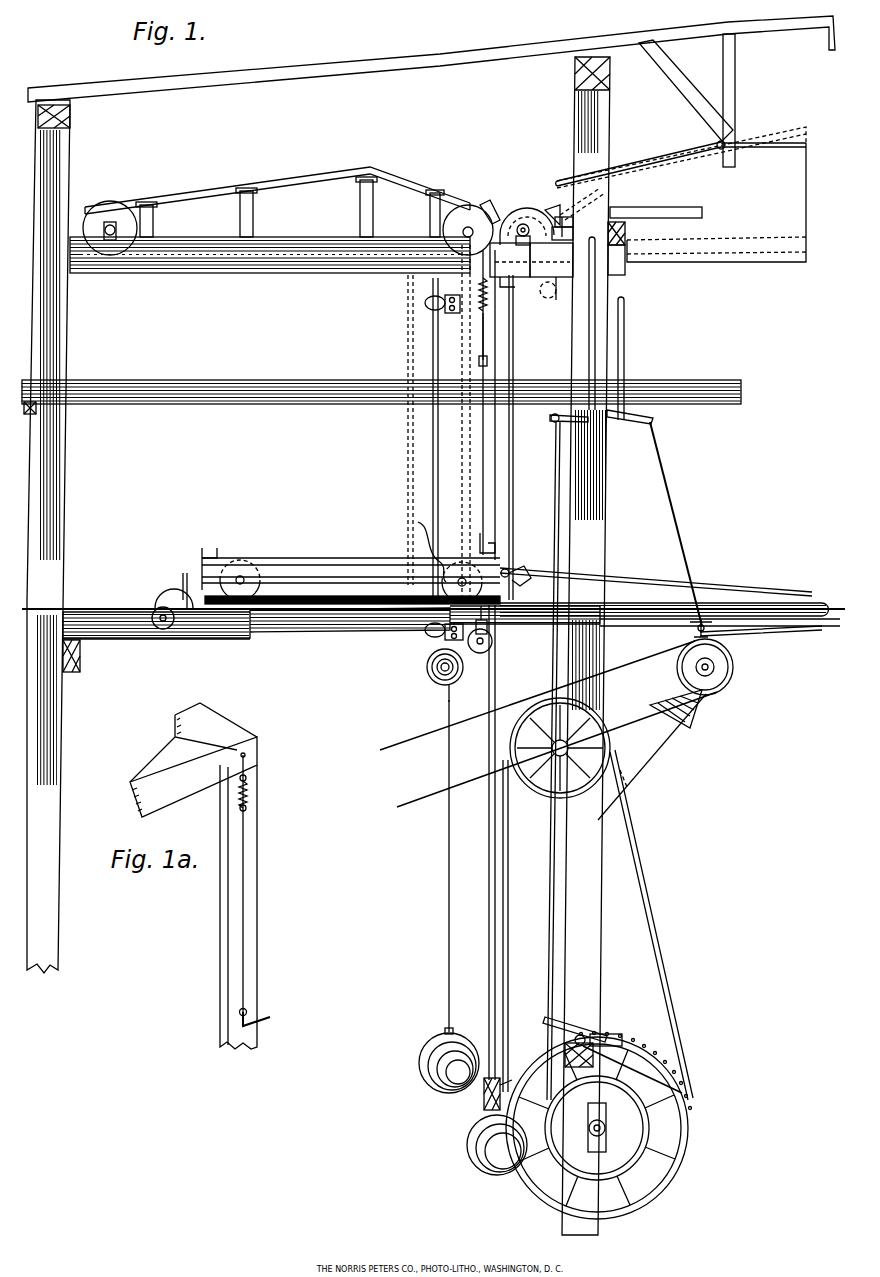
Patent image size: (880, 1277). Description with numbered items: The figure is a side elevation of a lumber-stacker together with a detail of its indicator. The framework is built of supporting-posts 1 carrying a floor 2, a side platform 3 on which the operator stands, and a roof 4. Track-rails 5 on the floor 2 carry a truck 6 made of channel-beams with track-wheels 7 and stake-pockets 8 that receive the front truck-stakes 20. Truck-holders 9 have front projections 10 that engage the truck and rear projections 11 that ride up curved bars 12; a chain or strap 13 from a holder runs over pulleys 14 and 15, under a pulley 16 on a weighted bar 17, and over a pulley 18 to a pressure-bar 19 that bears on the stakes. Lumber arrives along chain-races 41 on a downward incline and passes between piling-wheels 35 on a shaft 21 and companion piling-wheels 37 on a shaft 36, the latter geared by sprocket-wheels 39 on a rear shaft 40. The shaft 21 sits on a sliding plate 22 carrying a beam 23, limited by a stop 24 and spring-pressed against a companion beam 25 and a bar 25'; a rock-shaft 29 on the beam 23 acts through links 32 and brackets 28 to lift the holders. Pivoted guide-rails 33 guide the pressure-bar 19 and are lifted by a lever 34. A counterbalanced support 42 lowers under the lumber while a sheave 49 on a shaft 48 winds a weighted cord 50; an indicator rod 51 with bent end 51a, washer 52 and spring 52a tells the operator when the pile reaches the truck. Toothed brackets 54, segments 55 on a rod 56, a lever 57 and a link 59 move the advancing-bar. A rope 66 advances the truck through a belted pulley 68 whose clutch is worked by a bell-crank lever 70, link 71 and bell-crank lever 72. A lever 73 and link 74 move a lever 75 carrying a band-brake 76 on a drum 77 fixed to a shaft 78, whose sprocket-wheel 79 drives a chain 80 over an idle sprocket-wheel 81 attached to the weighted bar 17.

In FIG. 1, the supporting-posts 1 is at (576, 117).
In FIG. 1, the floor or platform 2 is at (92, 606).
In FIG. 1, the platform 3 is at (308, 386).
In FIG. 1, the roof 4 is at (360, 60).
In FIG. 1, the track-rails 5 is at (772, 600).
In FIG. 1, the truck 6 is at (302, 562).
In FIG. 1, the track-wheels 7 is at (250, 580).
In FIG. 1, the stake-pockets 8 is at (210, 550).
In FIG. 1, the truck-holders 9 is at (320, 600).
In FIG. 1, the upturned projections 10 is at (522, 568).
In FIG. 1, the upturned projections 11 is at (180, 581).
In FIG. 1, the curved bars 12 is at (163, 594).
In FIG. 1, the chain or strap 13 is at (290, 642).
In FIG. 1, the pulley 14 is at (163, 630).
In FIG. 1, the pulley 15 is at (492, 650).
In FIG. 1, the pulley 16 is at (483, 1095).
In FIG. 1, the weighted bar 17 is at (512, 1078).
In FIG. 1, the pulley 18 is at (510, 280).
In FIG. 1, the pressure-bar 19 is at (548, 290).
In FIG. 1, the front truck-stakes 20 is at (514, 343).
In FIG. 1, the shaft 21 is at (510, 260).
In FIG. 1, the sliding plate 22 is at (551, 260).
In FIG. 1, the beam 23 is at (562, 226).
In FIG. 1, the stop 24 is at (561, 294).
In FIG. 1, the companion beam 25 is at (640, 248).
In FIG. 1, the bar 25' is at (656, 200).
In FIG. 1, the brackets 28 is at (526, 224).
In FIG. 1, the rock-shaft 29 is at (583, 198).
In FIG. 1, the links 32 is at (550, 208).
In FIG. 1, the guide-rails 33 is at (735, 263).
In FIG. 1, the lever 34 is at (748, 147).
In FIG. 1, the piling-wheels 35 is at (527, 208).
In FIG. 1, the shaft 36 is at (470, 228).
In FIG. 1, the piling-wheels 37 is at (445, 222).
In FIG. 1, the sprocket-wheels 39 is at (110, 228).
In FIG. 1, the shaft 40 is at (120, 223).
In FIG. 1, the chain-races 41 is at (268, 180).
In FIG. 1, the counterbalanced support 42 is at (497, 296).
In FIG. 1, the shaft 48 is at (445, 686).
In FIG. 1, the sheave 49 is at (427, 672).
In FIG. 1, the weighted cord or chain 50 is at (448, 903).
In FIG. 1, the rod 51 is at (564, 216).
In FIG. 1A, the rod 51 is at (250, 902).
In FIG. 1, the bent lower end 51a is at (496, 545).
In FIG. 1A, the bent lower end 51a is at (272, 1018).
In FIG. 1, the washer 52 is at (480, 318).
In FIG. 1A, the washer 52 is at (250, 778).
In FIG. 1, the spring 52a is at (479, 362).
In FIG. 1A, the spring 52a is at (250, 797).
In FIG. 1, the brackets 54 is at (426, 303).
In FIG. 1, the segments 55 is at (447, 310).
In FIG. 1, the rod 56 is at (440, 297).
In FIG. 1, the lever 57 is at (414, 430).
In FIG. 1, the link 59 is at (432, 343).
In FIG. 1, the rope or chain 66 is at (630, 582).
In FIG. 1, the belted pulley 68 is at (716, 674).
In FIG. 1, the bell-crank lever 70 is at (690, 630).
In FIG. 1, the link 71 is at (678, 500).
In FIG. 1, the bell-crank lever 72 is at (625, 352).
In FIG. 1, the lever 73 is at (596, 345).
In FIG. 1, the link 74 is at (556, 490).
In FIG. 1, the lever 75 is at (578, 1030).
In FIG. 1, the band-brake 76 is at (638, 1070).
In FIG. 1, the drum 77 is at (597, 1128).
In FIG. 1, the shaft 78 is at (592, 1136).
In FIG. 1, the sprocket-wheel 79 is at (660, 1095).
In FIG. 1, the chain 80 is at (509, 948).
In FIG. 1, the idle sprocket-wheel 81 is at (545, 790).